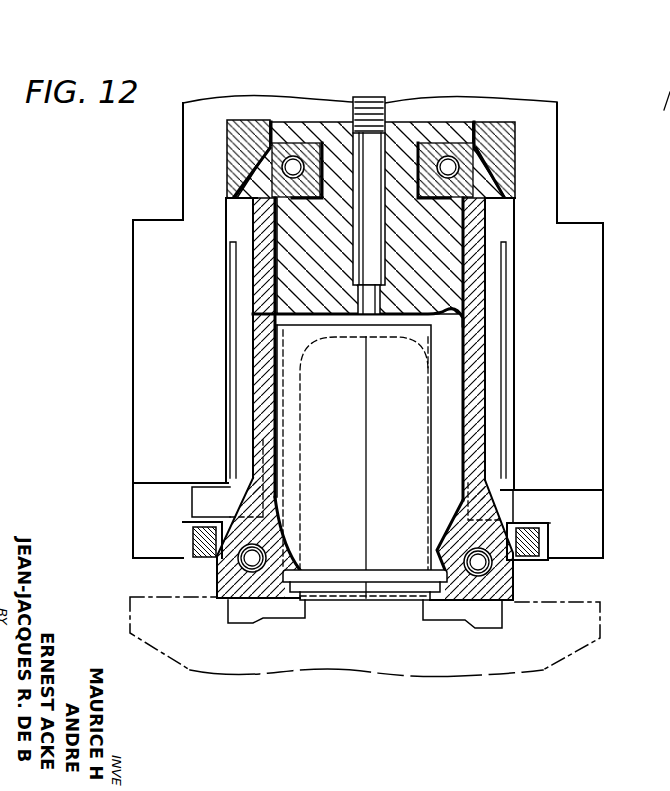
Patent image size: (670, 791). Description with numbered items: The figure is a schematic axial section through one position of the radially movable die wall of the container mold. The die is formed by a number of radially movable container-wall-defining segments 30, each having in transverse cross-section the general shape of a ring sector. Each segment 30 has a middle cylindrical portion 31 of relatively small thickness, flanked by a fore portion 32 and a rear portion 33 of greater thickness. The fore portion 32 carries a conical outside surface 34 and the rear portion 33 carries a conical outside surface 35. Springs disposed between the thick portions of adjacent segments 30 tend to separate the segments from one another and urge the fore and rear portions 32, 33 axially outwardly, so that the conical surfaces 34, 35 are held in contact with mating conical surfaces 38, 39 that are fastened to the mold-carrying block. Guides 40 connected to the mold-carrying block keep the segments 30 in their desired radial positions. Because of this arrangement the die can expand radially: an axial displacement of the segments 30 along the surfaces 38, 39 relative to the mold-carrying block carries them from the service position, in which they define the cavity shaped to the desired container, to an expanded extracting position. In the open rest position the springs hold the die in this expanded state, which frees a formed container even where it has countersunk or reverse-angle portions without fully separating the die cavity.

The segments 30 is at (267, 602).
The middle cylindrical portion 31 is at (258, 352).
The fore portion 32 is at (217, 600).
The rear portion 33 is at (288, 145).
The conical outside surface 34 is at (230, 515).
The conical outside surface 35 is at (267, 144).
The conical surface 38 is at (217, 560).
The conical surface 39 is at (243, 200).
The guides 40 is at (240, 312).